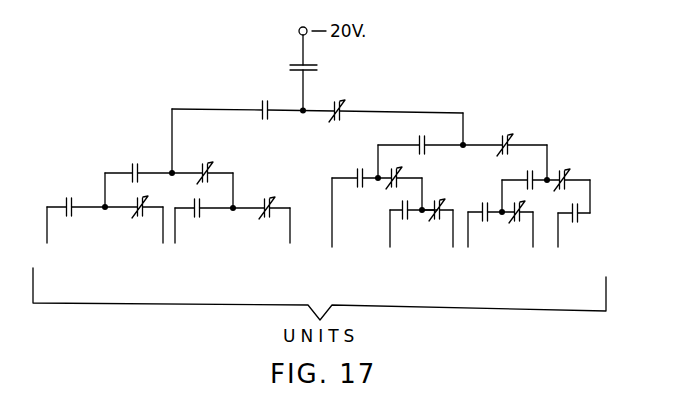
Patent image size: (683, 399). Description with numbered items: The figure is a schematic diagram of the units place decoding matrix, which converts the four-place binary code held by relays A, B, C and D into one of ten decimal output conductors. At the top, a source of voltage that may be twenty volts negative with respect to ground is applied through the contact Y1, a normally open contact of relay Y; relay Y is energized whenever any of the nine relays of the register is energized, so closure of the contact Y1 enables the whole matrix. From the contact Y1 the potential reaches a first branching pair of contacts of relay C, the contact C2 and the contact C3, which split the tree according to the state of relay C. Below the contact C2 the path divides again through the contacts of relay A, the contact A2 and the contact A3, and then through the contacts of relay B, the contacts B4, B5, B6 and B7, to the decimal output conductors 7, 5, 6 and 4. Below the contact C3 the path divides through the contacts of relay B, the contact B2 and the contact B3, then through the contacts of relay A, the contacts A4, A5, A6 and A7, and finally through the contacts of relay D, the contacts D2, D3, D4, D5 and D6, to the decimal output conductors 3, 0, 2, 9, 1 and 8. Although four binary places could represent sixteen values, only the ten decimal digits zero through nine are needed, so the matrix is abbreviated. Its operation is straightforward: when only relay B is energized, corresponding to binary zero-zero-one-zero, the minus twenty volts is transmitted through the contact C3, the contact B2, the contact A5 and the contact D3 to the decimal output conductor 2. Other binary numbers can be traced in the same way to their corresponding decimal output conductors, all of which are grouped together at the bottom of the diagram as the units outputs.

The contact of relay Y Y1 is at (317, 69).
The contact of relay C C2 is at (253, 124).
The contact of relay C C3 is at (394, 125).
The contact of relay A A2 is at (138, 162).
The contact of relay A A3 is at (202, 163).
The contact of relay A A4 is at (359, 187).
The contact of relay A A5 is at (397, 188).
The contact of relay A A6 is at (529, 189).
The contact of relay A A7 is at (558, 170).
The contact of relay B B2 is at (420, 157).
The contact of relay B B3 is at (505, 156).
The contact of relay B B4 is at (76, 220).
The contact of relay B B5 is at (134, 219).
The contact of relay B B6 is at (204, 222).
The contact of relay B B7 is at (261, 221).
The contact of relay D D2 is at (413, 224).
The contact of relay D D3 is at (437, 223).
The contact of relay D D4 is at (484, 225).
The contact of relay D D5 is at (517, 224).
The contact of relay D D6 is at (574, 225).
The decimal output conductor 7 is at (45, 239).
The decimal output conductor 5 is at (163, 239).
The decimal output conductor 6 is at (177, 240).
The decimal output conductor 4 is at (292, 240).
The decimal output conductor 3 is at (332, 225).
The decimal output conductor 0 is at (388, 241).
The decimal output conductor 2 is at (452, 241).
The decimal output conductor 9 is at (472, 242).
The decimal output conductor 1 is at (530, 242).
The decimal output conductor 8 is at (558, 242).